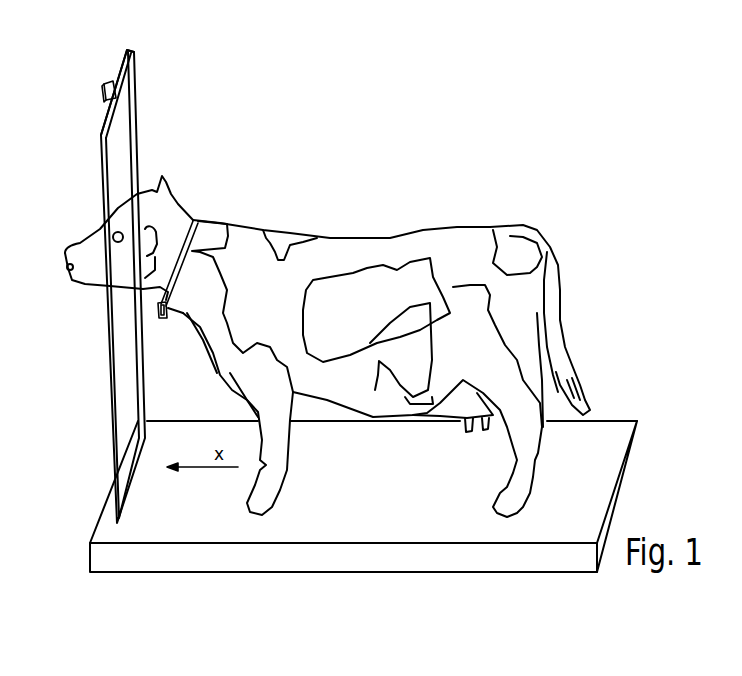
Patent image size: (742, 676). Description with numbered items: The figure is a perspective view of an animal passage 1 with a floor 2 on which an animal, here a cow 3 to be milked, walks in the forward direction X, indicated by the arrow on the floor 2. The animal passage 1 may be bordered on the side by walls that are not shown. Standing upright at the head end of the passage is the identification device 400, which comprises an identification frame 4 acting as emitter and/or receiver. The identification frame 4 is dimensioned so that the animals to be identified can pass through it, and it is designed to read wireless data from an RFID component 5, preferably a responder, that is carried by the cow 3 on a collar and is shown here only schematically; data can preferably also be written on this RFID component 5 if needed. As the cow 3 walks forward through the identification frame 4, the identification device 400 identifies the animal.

The animal passage 1 is at (107, 412).
The floor 2 is at (605, 433).
The cow 3 is at (375, 247).
The identification frame 4 is at (133, 99).
The identification device 400 is at (131, 45).
The RFID component 5 is at (157, 312).